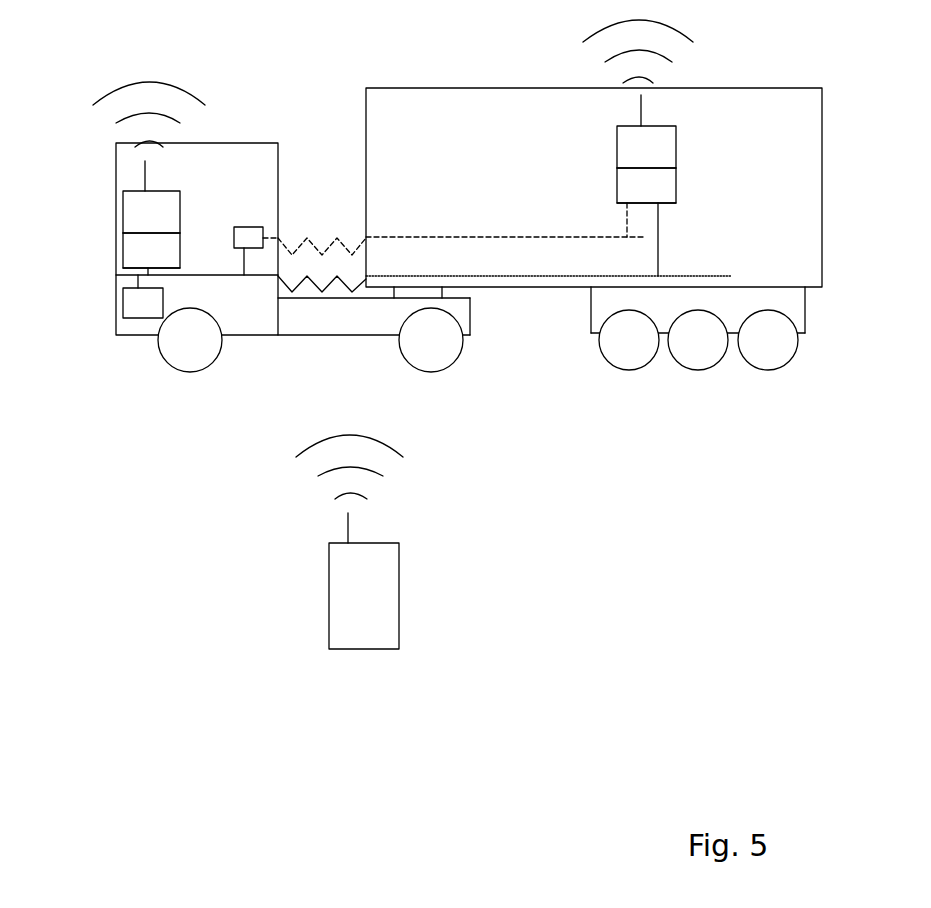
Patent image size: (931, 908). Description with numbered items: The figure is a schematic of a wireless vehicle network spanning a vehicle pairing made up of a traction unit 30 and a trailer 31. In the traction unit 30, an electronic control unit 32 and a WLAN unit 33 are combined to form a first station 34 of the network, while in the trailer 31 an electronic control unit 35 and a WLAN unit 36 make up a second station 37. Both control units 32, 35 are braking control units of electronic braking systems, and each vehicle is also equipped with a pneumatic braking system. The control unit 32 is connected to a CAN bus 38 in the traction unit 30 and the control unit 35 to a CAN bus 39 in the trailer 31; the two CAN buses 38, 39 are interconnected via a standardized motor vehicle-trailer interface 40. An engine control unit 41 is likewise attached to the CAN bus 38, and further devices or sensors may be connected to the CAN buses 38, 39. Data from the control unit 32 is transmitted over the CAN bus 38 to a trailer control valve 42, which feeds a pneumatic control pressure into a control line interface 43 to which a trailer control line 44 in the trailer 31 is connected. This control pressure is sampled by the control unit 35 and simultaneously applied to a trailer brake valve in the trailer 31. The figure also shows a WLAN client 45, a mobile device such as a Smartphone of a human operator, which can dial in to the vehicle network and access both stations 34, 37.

The traction unit 30 is at (205, 383).
The trailer 31 is at (658, 388).
The electronic control unit 32 is at (135, 257).
The WLAN unit 33 is at (157, 202).
The first station 34 is at (190, 215).
The electronic control unit 35 is at (665, 188).
The WLAN unit 36 is at (653, 143).
The second station 37 is at (605, 155).
The CAN bus 38 is at (227, 277).
The CAN bus 39 is at (547, 276).
The motor vehicle-trailer interface 40 is at (313, 262).
The engine control unit 41 is at (145, 307).
The trailer control valve 42 is at (253, 235).
The control line interface 43 is at (313, 262).
The trailer control line 44 is at (470, 233).
The WLAN client 45 is at (385, 616).